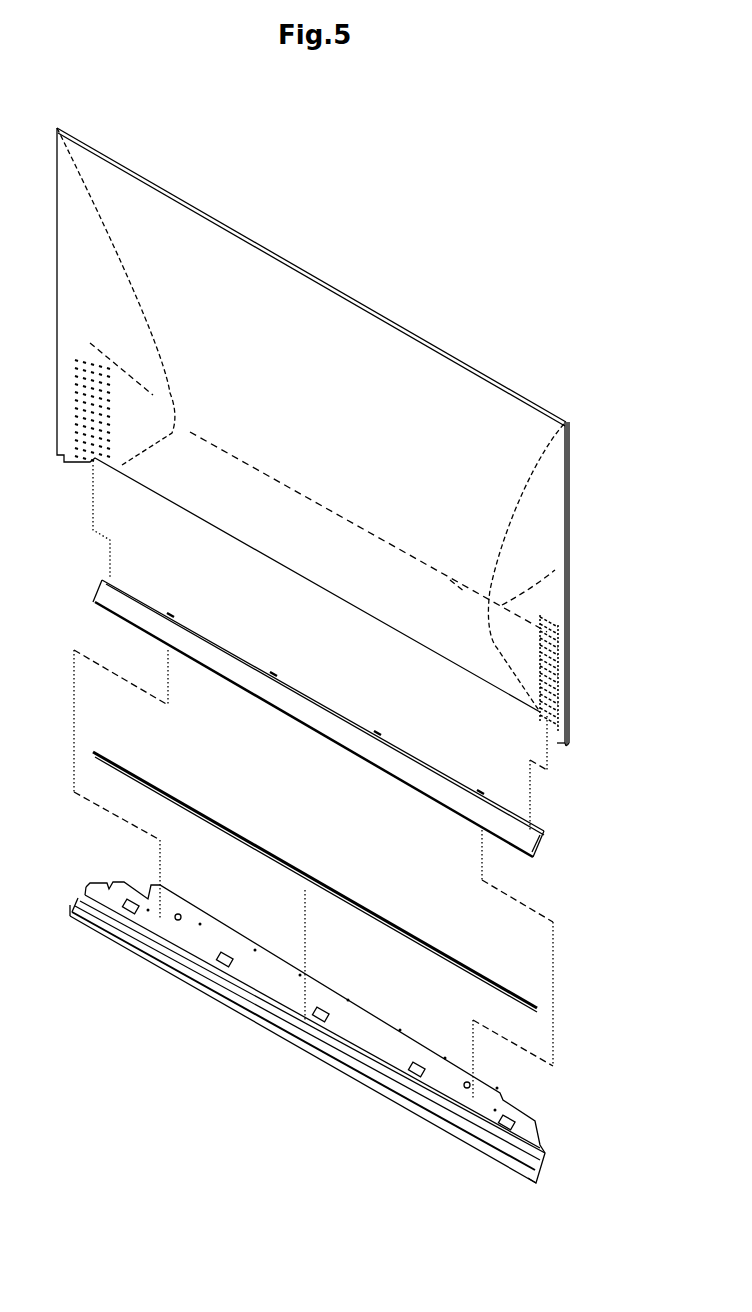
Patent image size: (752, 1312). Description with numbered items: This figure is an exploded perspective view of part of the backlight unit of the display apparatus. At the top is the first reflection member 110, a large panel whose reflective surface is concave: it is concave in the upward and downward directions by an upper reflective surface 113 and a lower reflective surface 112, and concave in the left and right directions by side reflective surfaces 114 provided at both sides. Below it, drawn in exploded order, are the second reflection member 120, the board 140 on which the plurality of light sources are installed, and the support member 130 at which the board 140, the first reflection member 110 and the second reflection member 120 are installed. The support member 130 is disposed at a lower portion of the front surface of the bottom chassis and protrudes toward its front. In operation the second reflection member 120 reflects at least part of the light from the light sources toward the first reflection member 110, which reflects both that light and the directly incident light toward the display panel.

The first reflection member 110 is at (358, 437).
The lower reflective surface 112 is at (323, 559).
The upper reflective surface 113 is at (342, 300).
The side reflective surface 114 is at (548, 487).
The second reflection member 120 is at (548, 834).
The support member 130 is at (540, 1134).
The board 140 is at (540, 994).